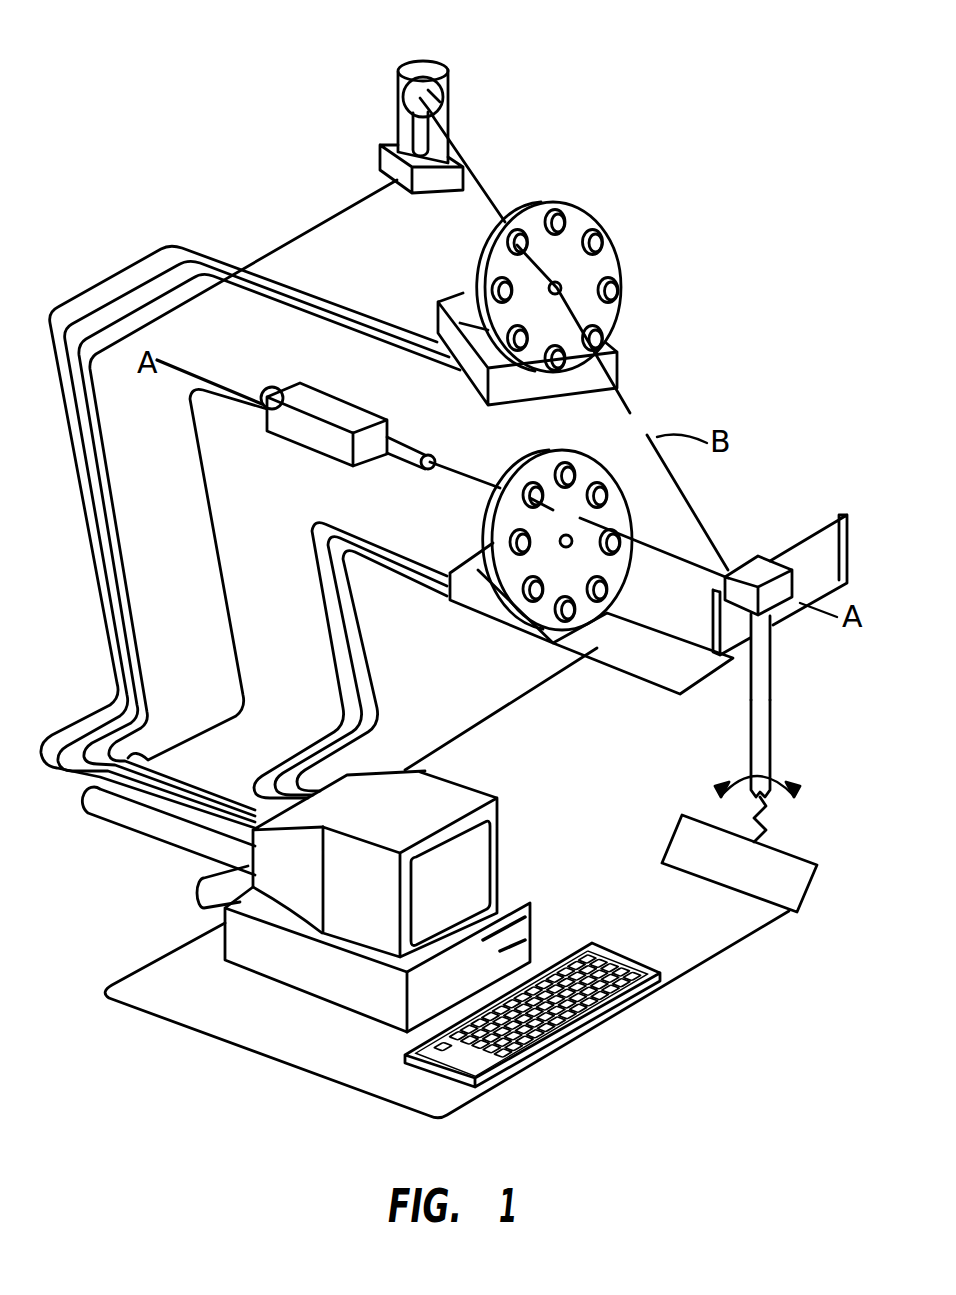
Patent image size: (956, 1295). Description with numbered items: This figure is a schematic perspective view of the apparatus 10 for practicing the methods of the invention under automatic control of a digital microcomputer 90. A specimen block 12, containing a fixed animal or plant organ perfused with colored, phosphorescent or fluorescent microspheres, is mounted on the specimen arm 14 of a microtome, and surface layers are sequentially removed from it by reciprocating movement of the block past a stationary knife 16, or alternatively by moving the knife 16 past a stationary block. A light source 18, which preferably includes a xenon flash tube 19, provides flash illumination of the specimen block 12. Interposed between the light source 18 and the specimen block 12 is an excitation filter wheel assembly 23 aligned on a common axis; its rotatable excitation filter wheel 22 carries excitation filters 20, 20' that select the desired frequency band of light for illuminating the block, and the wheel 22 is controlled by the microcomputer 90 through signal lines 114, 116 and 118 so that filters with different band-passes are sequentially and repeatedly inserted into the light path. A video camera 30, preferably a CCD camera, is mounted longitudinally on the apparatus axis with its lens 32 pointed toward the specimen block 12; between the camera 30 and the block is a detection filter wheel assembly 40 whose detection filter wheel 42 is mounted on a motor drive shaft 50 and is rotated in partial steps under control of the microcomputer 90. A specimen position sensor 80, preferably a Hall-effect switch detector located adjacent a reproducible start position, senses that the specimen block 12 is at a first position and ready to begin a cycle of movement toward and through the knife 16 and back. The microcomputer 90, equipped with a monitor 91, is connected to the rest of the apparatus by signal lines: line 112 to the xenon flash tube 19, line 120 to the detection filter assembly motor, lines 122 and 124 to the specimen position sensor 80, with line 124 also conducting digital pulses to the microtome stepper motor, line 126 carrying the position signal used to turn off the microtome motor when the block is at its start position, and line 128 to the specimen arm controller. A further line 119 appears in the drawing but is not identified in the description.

The apparatus 10 is at (166, 106).
The specimen block 12 is at (745, 565).
The specimen arm 14 is at (760, 683).
The knife 16 is at (753, 638).
The light source 18 is at (447, 80).
The xenon flash tube 19 is at (435, 118).
The excitation filter 20 is at (549, 250).
The excitation filter 20' is at (633, 207).
The excitation filter wheel 22 is at (617, 287).
The excitation filter wheel assembly 23 is at (560, 382).
The video camera 30 is at (337, 405).
The lens 32 is at (445, 462).
The detection filter wheel assembly 40 is at (500, 608).
The detection filter wheel 42 is at (562, 549).
The drive shaft 50 is at (570, 544).
The specimen position sensor 80 is at (593, 648).
The microcomputer 90 is at (310, 961).
The monitor 91 is at (452, 902).
The signal line 112 is at (387, 160).
The signal line 114 is at (335, 323).
The signal line 116 is at (120, 295).
The signal line 118 is at (80, 290).
The tube 119 is at (207, 512).
The signal line 120 is at (317, 533).
The signal line 122 is at (363, 492).
The signal line 124 is at (433, 517).
The signal line 126 is at (212, 1040).
The signal line 128 is at (443, 748).